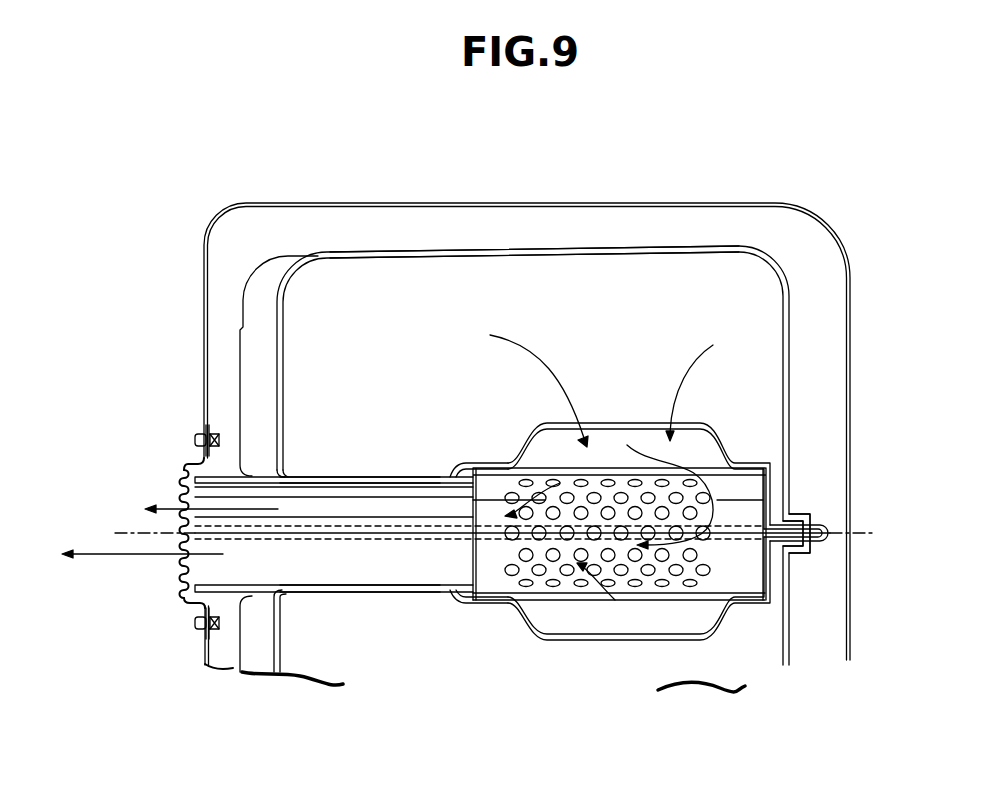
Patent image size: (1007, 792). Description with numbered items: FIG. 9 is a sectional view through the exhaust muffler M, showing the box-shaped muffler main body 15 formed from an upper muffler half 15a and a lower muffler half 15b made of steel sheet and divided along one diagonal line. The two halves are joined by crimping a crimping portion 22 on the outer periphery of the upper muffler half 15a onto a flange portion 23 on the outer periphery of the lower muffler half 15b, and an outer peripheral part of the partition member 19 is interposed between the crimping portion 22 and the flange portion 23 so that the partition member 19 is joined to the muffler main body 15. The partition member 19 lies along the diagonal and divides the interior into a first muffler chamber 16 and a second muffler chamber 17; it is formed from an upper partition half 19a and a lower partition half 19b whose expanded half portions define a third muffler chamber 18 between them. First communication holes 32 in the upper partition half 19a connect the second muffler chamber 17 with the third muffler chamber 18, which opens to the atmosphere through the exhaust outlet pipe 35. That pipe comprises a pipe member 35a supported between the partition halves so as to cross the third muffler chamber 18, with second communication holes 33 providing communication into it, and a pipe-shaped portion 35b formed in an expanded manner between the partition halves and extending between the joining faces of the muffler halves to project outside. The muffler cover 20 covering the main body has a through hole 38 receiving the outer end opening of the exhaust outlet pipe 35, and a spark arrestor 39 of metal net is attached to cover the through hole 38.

The muffler main body 15 is at (509, 452).
The upper muffler half 15a is at (402, 247).
The lower muffler half 15b is at (277, 650).
The first muffler chamber 16 is at (358, 664).
The second muffler chamber 17 is at (385, 364).
The third muffler chamber 18 is at (688, 624).
The partition member 19 is at (340, 534).
The upper partition half 19a is at (330, 477).
The lower partition half 19b is at (318, 593).
The muffler cover 20 is at (217, 232).
The crimping portion 22 is at (812, 525).
The flange portion 23 is at (812, 548).
The first communication holes 32 is at (668, 422).
The second communication holes 33 is at (672, 600).
The exhaust outlet pipe 35 is at (579, 607).
The pipe member 35a is at (553, 598).
The pipe-shaped portion 35b is at (415, 593).
The through hole 38 is at (184, 572).
The spark arrestor 39 is at (184, 500).
The exhaust muffler M is at (663, 215).